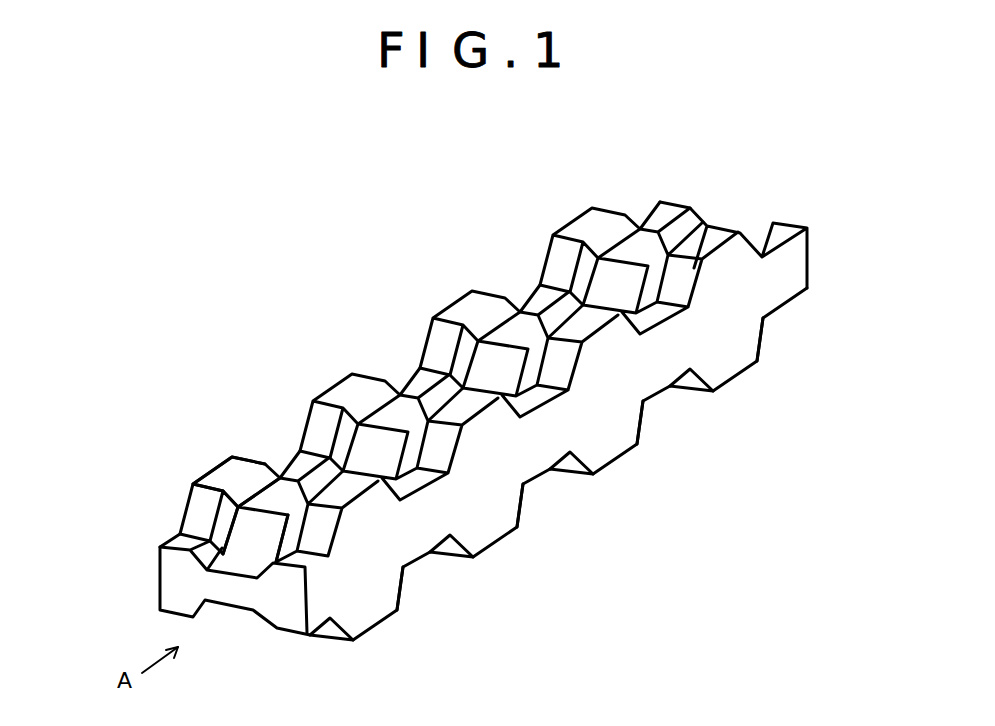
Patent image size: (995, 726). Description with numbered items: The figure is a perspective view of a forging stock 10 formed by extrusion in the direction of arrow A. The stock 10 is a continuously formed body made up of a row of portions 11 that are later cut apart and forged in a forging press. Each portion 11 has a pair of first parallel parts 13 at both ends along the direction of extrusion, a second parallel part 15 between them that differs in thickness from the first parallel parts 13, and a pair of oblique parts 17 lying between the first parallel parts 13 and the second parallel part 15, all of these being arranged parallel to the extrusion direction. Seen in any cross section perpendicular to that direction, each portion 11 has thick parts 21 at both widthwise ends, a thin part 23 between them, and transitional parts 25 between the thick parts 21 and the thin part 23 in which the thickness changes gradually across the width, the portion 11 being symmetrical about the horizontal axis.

The forging stock 10 is at (314, 228).
The portion 11 is at (568, 201).
The first parallel part 13 is at (185, 592).
The second parallel part 15 is at (372, 631).
The oblique part 17 is at (330, 630).
The thick part 21 is at (276, 495).
The thin part 23 is at (248, 470).
The transitional part 25 is at (222, 520).